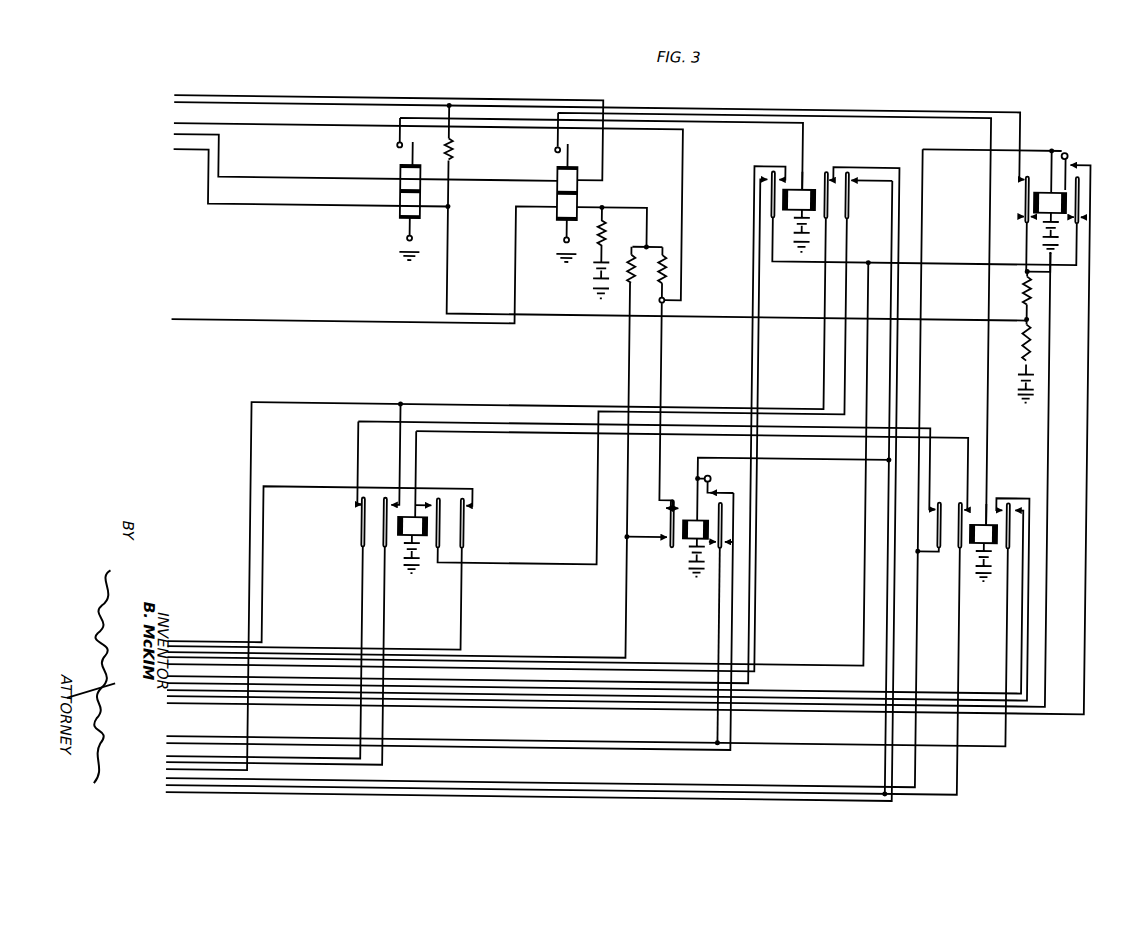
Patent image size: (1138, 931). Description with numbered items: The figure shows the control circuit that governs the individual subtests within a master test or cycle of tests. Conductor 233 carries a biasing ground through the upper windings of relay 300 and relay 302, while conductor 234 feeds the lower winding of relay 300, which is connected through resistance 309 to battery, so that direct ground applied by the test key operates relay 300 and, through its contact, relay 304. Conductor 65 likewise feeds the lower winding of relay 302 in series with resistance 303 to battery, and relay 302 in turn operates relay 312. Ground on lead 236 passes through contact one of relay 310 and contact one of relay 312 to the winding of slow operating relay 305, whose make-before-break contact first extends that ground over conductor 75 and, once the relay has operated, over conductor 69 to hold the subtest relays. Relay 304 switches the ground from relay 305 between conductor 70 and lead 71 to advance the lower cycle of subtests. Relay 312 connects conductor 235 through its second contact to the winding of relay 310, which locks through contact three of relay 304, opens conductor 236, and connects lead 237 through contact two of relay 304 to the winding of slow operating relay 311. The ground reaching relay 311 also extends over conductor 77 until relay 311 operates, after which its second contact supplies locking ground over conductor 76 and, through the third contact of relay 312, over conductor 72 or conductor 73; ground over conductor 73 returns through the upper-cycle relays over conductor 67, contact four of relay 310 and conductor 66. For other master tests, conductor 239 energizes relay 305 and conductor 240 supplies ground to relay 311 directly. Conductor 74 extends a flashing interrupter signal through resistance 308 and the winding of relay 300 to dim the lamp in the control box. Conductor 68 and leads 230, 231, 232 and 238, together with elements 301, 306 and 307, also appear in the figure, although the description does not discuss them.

The conductor 65 is at (249, 324).
The conductor 66 is at (201, 647).
The conductor 67 is at (239, 652).
The conductor 68 is at (303, 658).
The conductor 69 is at (341, 663).
The conductor 70 is at (419, 670).
The lead 71 is at (411, 684).
The conductor 72 is at (446, 691).
The conductor 73 is at (476, 698).
The conductor 74 is at (512, 704).
The conductor 75 is at (551, 711).
The conductor 76 is at (588, 742).
The conductor 77 is at (623, 749).
The conductor 230 is at (252, 101).
The conductor 231 is at (307, 108).
The conductor 232 is at (251, 129).
The conductor 233 is at (250, 181).
The conductor 234 is at (252, 208).
The conductor 235 is at (477, 791).
The lead 236 is at (207, 762).
The lead 237 is at (303, 768).
The conductor 238 is at (253, 775).
The conductor 239 is at (405, 784).
The conductor 240 is at (535, 798).
The relay 300 is at (397, 208).
The resistor 301 is at (455, 152).
The relay 302 is at (577, 212).
The resistance 303 is at (590, 232).
The relay 304 is at (801, 185).
The slow operating relay 305 is at (1036, 210).
The resistor 306 is at (624, 254).
The resistor 307 is at (671, 278).
The resistance 308 is at (1034, 289).
The resistance 309 is at (1034, 342).
The relay 310 is at (411, 580).
The slow operating relay 311 is at (688, 542).
The relay 312 is at (988, 498).